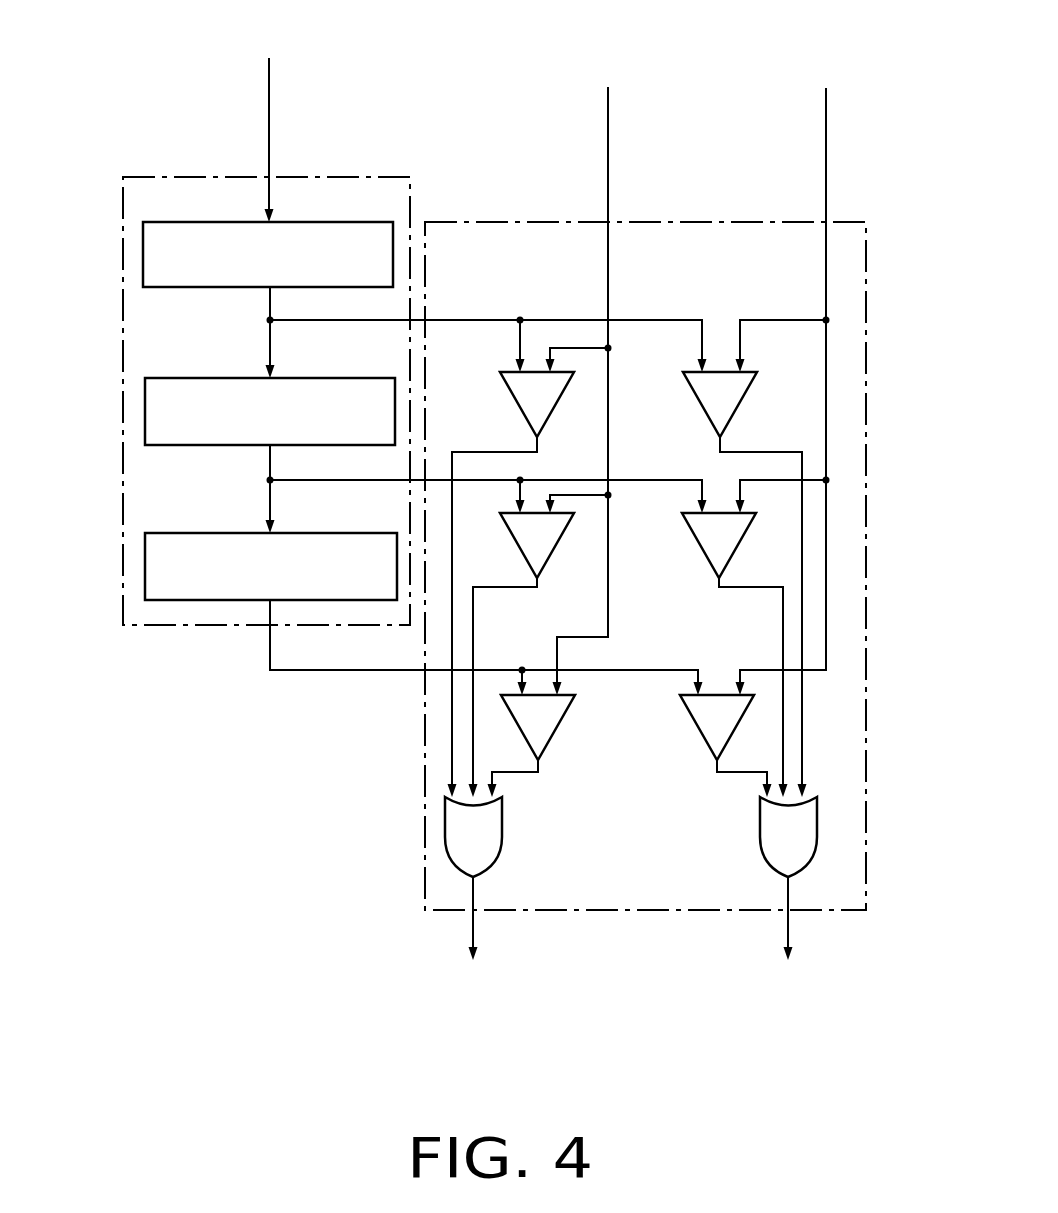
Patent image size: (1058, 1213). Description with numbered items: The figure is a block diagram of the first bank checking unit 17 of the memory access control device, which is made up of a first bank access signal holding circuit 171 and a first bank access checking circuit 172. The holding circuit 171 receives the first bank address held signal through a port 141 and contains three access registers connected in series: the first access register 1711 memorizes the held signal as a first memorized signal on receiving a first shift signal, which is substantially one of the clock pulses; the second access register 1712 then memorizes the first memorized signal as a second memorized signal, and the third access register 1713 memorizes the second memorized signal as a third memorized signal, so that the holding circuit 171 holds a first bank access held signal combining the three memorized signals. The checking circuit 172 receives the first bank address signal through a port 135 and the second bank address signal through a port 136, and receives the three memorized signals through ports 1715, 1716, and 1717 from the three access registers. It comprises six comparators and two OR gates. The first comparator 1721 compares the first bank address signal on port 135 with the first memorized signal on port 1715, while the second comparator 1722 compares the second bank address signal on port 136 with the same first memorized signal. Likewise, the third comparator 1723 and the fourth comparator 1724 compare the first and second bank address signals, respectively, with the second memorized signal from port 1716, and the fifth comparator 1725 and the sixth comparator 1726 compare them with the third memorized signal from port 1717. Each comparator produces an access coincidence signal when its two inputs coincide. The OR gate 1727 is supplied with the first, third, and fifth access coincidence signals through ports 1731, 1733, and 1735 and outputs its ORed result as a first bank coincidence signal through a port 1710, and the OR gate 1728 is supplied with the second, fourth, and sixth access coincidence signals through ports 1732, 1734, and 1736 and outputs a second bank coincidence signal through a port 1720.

The first bank checking unit 17 is at (714, 48).
The port 141 is at (269, 100).
The port 135 is at (608, 140).
The port 136 is at (826, 140).
The first bank access signal holding circuit 171 is at (172, 628).
The first bank access checking circuit 172 is at (617, 912).
The first access register 1711 is at (143, 253).
The second access register 1712 is at (145, 418).
The third access register 1713 is at (145, 572).
The port 1715 is at (268, 302).
The port 1716 is at (268, 462).
The port 1717 is at (272, 660).
The first comparator 1721 is at (506, 370).
The second comparator 1722 is at (692, 370).
The third comparator 1723 is at (555, 540).
The fourth comparator 1724 is at (697, 540).
The fifth comparator 1725 is at (560, 725).
The sixth comparator 1726 is at (694, 725).
The OR gate 1727 is at (498, 853).
The OR gate 1728 is at (762, 847).
The port 1731 is at (523, 447).
The port 1732 is at (717, 447).
The port 1733 is at (492, 590).
The port 1734 is at (740, 590).
The port 1735 is at (517, 775).
The port 1736 is at (732, 775).
The port 1710 is at (470, 928).
The port 1720 is at (790, 927).